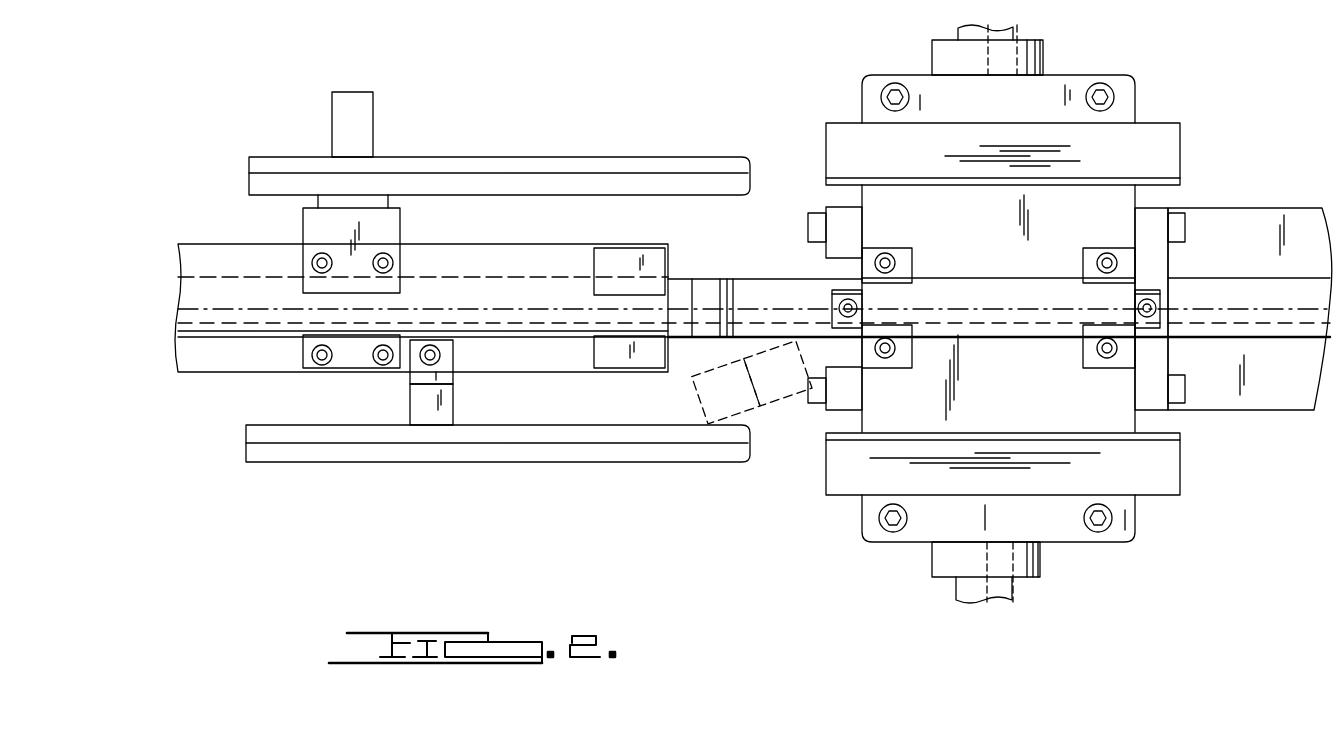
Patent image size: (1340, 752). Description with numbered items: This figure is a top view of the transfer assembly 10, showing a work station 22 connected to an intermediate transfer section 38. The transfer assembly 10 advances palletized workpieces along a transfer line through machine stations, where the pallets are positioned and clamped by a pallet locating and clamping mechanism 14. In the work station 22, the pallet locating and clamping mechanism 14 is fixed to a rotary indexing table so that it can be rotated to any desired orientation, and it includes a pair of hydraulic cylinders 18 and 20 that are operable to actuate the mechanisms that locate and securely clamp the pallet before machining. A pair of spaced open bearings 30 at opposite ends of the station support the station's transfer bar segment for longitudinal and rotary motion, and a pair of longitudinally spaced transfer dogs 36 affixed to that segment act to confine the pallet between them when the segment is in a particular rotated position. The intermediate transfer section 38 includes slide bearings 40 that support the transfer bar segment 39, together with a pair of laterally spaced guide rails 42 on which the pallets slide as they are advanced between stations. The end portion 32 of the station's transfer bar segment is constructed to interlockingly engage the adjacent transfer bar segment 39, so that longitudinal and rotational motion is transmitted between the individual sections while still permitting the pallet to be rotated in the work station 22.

The transfer assembly 10 is at (825, 70).
The pallet locating and clamping mechanism 14 is at (1168, 121).
The hydraulic cylinder 18 is at (1010, 590).
The hydraulic cylinder 20 is at (1013, 31).
The work station 22 is at (1133, 76).
The open bearing 30 is at (912, 250).
The end portion 32 is at (745, 278).
The transfer dog 36 is at (832, 298).
The intermediate transfer section 38 is at (480, 155).
The transfer bar segment 39 is at (508, 276).
The slide bearing 40 is at (400, 212).
The guide rail 42 is at (594, 155).